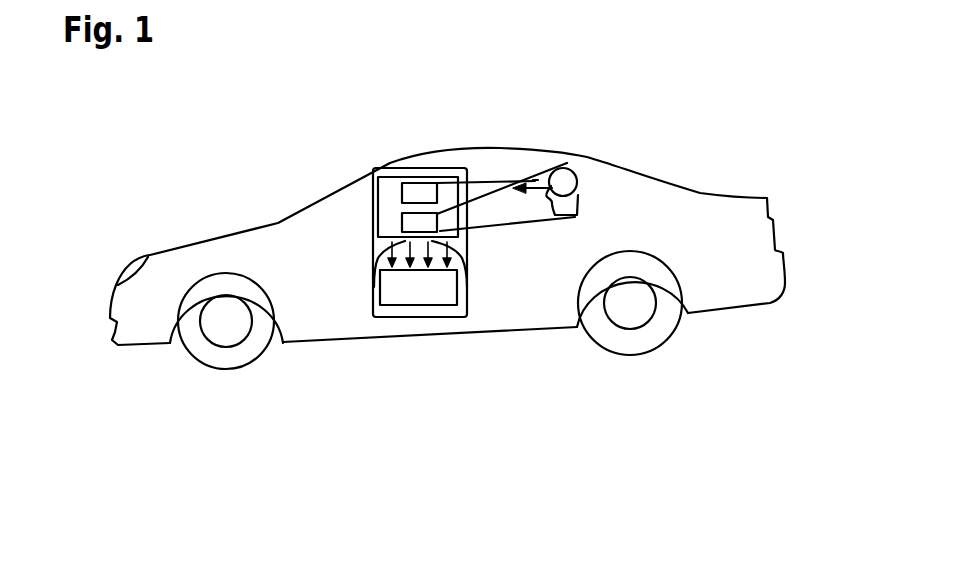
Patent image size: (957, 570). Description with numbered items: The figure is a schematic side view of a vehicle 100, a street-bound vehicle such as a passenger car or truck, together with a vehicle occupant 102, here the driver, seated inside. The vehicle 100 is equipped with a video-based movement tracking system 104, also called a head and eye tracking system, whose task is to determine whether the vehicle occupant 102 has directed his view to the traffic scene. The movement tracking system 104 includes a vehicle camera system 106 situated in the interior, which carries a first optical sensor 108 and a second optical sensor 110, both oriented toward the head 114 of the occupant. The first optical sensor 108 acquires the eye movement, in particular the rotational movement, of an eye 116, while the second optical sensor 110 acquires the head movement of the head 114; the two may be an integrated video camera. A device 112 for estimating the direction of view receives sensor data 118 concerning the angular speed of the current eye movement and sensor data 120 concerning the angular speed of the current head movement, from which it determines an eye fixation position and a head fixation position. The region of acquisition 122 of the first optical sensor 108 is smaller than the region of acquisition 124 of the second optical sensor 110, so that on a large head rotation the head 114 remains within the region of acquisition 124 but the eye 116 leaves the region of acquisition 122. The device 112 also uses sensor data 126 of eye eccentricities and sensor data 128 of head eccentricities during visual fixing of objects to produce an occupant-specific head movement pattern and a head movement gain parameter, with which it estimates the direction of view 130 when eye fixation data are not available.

The vehicle 100 is at (750, 313).
The vehicle occupant 102 is at (588, 196).
The movement tracking system 104 is at (457, 168).
The vehicle camera system 106 is at (400, 177).
The first optical sensor 108 is at (402, 192).
The second optical sensor 110 is at (402, 223).
The device for estimating the direction of view 112 is at (398, 313).
The head 114 is at (590, 182).
The eye 116 is at (588, 195).
The sensor data concerning an angular speed of a current eye movement 118 is at (383, 270).
The sensor data concerning an angular speed of a current head movement 120 is at (378, 258).
The region of acquisition of the first optical sensor 122 is at (487, 180).
The region of acquisition of the second optical sensor 124 is at (537, 179).
The sensor data of eye eccentricities 126 is at (455, 250).
The sensor data of head eccentricities 128 is at (463, 260).
The direction of view 130 is at (533, 181).